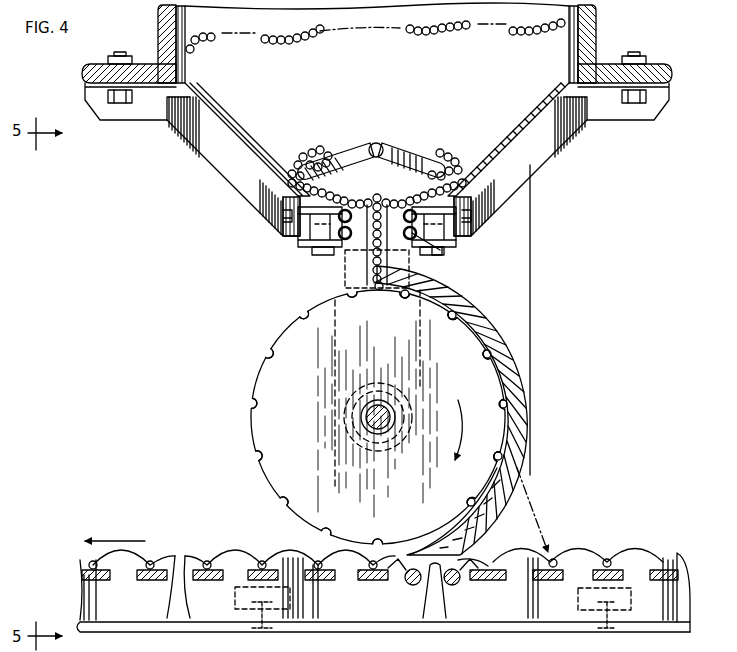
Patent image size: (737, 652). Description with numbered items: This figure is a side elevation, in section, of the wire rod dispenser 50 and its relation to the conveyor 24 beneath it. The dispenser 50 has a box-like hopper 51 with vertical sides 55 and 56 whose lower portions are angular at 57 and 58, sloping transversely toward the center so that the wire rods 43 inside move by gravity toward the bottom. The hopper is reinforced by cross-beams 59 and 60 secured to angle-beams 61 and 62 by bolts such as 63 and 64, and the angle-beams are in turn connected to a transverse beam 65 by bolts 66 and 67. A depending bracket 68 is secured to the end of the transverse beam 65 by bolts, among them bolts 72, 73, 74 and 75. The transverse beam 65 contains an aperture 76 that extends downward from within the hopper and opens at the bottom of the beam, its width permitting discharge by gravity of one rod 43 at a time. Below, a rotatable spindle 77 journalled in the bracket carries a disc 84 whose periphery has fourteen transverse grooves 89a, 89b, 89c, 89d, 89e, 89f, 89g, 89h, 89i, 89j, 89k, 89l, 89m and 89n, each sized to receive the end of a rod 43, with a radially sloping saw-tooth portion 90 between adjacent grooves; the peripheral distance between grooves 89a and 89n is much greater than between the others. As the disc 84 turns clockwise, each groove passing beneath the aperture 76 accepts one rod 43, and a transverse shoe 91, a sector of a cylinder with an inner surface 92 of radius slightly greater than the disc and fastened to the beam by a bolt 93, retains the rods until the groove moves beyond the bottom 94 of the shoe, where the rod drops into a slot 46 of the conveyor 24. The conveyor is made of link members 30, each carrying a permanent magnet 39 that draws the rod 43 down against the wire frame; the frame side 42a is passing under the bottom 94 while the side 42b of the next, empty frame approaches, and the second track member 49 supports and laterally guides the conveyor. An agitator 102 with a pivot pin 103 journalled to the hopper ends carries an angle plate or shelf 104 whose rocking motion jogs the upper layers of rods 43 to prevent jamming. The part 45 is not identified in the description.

The conveyor 24 is at (652, 560).
The link members 30 is at (125, 553).
The permanent magnet 39 is at (145, 581).
The side of wire frame 42a is at (412, 586).
The side of next wire frame 42b is at (455, 586).
The wire rods 43 is at (298, 160).
The hook bracket 45 is at (536, 588).
The slots 46 is at (547, 560).
The second track member 49 is at (688, 626).
The dispenser 50 is at (598, 28).
The hopper 51 is at (217, 103).
The vertical side 55 is at (180, 60).
The vertical side 56 is at (570, 46).
The angular lower portion 57 is at (253, 150).
The angular lower portion 58 is at (520, 131).
The cross-beam 59 is at (162, 33).
The cross-beam 60 is at (592, 55).
The angle-beam 61 is at (217, 160).
The angle-beam 62 is at (545, 150).
The bolt 63 is at (125, 103).
The bolt 64 is at (635, 103).
The transverse beam 65 is at (310, 247).
The bolt 66 is at (282, 222).
The bolt 67 is at (478, 222).
The depending bracket 68 is at (420, 355).
The bolt 72 is at (349, 240).
The bolt 73 is at (326, 255).
The bolt 74 is at (442, 250).
The bolt 75 is at (440, 255).
The aperture 76 is at (345, 284).
The spindle 77 is at (373, 430).
The disc 84 is at (440, 445).
The transverse groove 89a is at (377, 541).
The transverse groove 89b is at (326, 531).
The transverse groove 89c is at (284, 502).
The transverse groove 89d is at (259, 457).
The transverse groove 89e is at (253, 405).
The transverse groove 89f is at (269, 355).
The transverse groove 89g is at (303, 316).
The transverse groove 89h is at (352, 298).
The transverse groove 89i is at (400, 297).
The transverse groove 89j is at (451, 321).
The transverse groove 89k is at (486, 358).
The transverse groove 89l is at (502, 406).
The transverse groove 89m is at (497, 458).
The transverse groove 89n is at (470, 500).
The radially sloping portion 90 is at (255, 400).
The shoe 91 is at (530, 418).
The inner surface 92 is at (524, 360).
The bolt 93 is at (442, 255).
The bottom of shoe 94 is at (412, 552).
The agitator 102 is at (348, 148).
The pivot pin 103 is at (382, 143).
The angle plate or shelf 104 is at (418, 152).